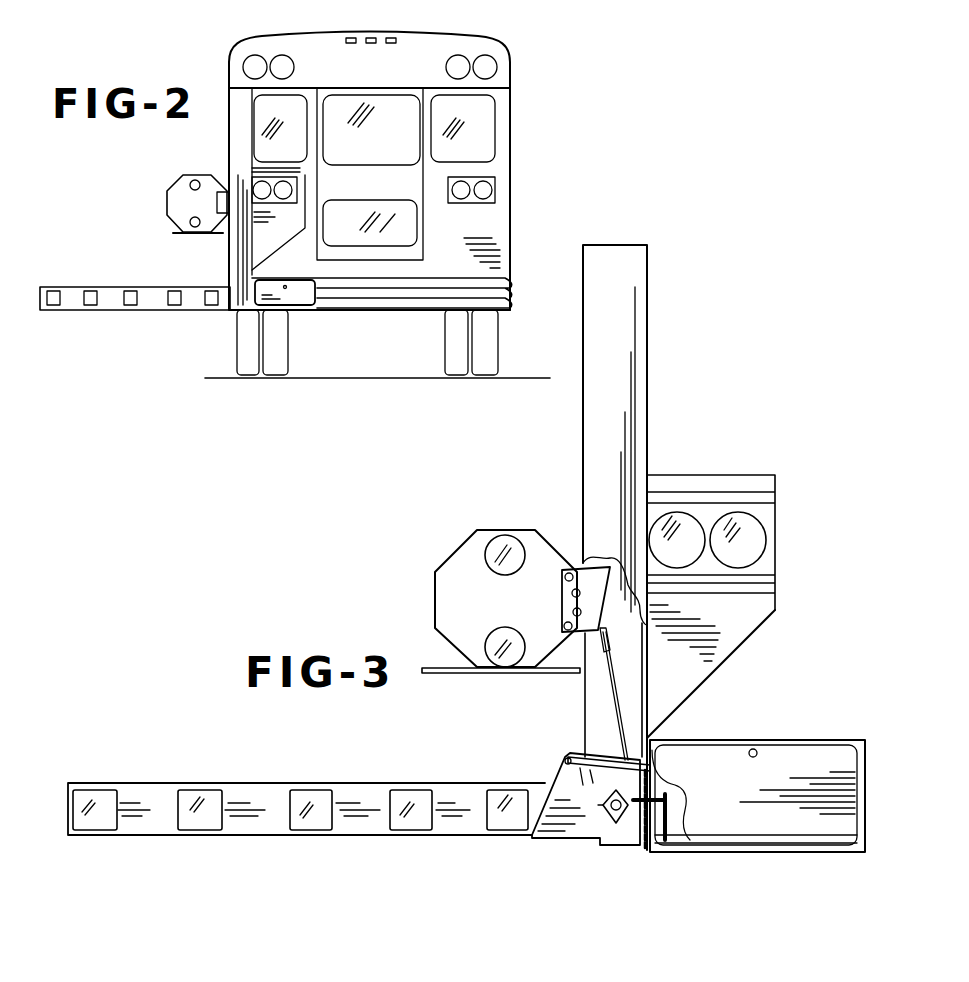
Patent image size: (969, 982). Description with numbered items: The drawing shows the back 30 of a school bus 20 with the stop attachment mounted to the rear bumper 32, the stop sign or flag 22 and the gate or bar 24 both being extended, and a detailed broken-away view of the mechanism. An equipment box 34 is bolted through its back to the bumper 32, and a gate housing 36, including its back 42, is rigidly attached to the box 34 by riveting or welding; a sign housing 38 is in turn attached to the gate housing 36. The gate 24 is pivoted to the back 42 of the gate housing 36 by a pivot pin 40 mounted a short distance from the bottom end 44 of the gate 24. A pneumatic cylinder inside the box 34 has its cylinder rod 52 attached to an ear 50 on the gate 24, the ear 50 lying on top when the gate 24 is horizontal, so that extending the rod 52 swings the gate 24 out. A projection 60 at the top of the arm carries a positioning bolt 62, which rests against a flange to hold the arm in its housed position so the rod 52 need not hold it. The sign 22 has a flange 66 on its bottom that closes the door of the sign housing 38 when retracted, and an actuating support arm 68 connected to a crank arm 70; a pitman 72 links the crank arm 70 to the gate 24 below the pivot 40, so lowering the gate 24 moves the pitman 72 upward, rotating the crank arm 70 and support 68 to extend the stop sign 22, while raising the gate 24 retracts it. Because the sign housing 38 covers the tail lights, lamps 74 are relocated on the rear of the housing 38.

In FIG. 2, the school bus 20 is at (458, 28).
In FIG. 2, the stop sign or flag 22 is at (173, 186).
In FIG. 3, the stop sign or flag 22 is at (462, 545).
In FIG. 2, the gate or bar 24 is at (113, 288).
In FIG. 3, the gate or bar 24 is at (355, 783).
In FIG. 2, the back (of bus) 30 is at (382, 76).
In FIG. 2, the rear bumper 32 is at (428, 309).
In FIG. 2, the equipment box 34 is at (306, 304).
In FIG. 3, the equipment box 34 is at (815, 757).
In FIG. 3, the gate housing 36 is at (648, 338).
In FIG. 2, the sign housing 38 is at (299, 229).
In FIG. 3, the sign housing 38 is at (752, 475).
In FIG. 3, the pivot pin 40 is at (585, 838).
In FIG. 3, the back (of gate housing) 42 is at (651, 733).
In FIG. 3, the bottom end (of gate) 44 is at (642, 850).
In FIG. 3, the ear, rod 50 is at (562, 775).
In FIG. 3, the hydraulic cylinder rod 52 is at (578, 752).
In FIG. 3, the projection (top of arm) 60 is at (605, 782).
In FIG. 3, the positioning bolt 62 is at (612, 757).
In FIG. 3, the flange, sign 66 is at (460, 675).
In FIG. 3, the actuating support 68 is at (577, 567).
In FIG. 3, the crank arm 70 is at (605, 672).
In FIG. 3, the pitman 72 is at (647, 686).
In FIG. 3, the lamps 74 is at (691, 560).